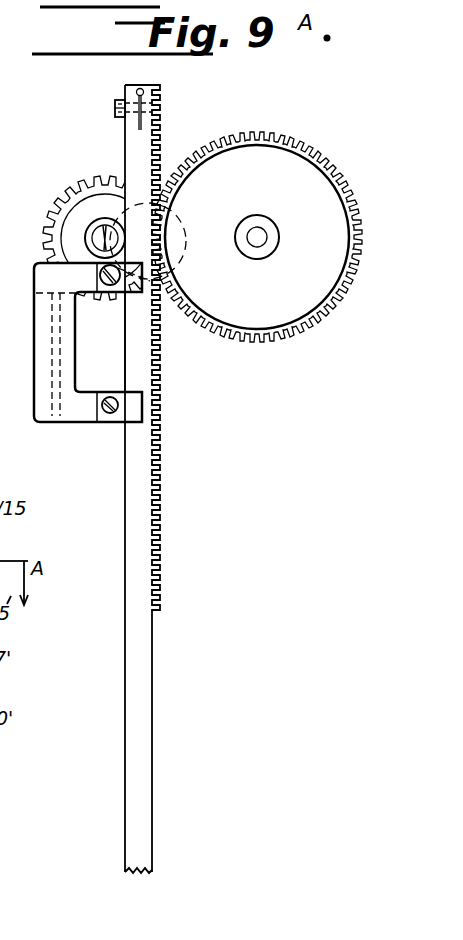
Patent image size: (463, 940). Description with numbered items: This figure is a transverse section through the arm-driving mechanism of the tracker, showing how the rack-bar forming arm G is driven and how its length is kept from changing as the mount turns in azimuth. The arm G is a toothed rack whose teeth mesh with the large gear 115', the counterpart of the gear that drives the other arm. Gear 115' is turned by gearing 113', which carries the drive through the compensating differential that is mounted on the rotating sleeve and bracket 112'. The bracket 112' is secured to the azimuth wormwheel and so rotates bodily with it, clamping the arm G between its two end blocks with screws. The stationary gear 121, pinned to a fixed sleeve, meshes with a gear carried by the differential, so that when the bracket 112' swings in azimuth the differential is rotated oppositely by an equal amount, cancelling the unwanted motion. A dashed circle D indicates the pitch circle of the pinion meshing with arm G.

The arm G is at (142, 463).
The gear 115' is at (262, 241).
The pitch circle of pinion D is at (161, 236).
The gearing 113' is at (105, 224).
The stationary gear 121 is at (63, 222).
The sleeve and bracket 112' is at (91, 365).